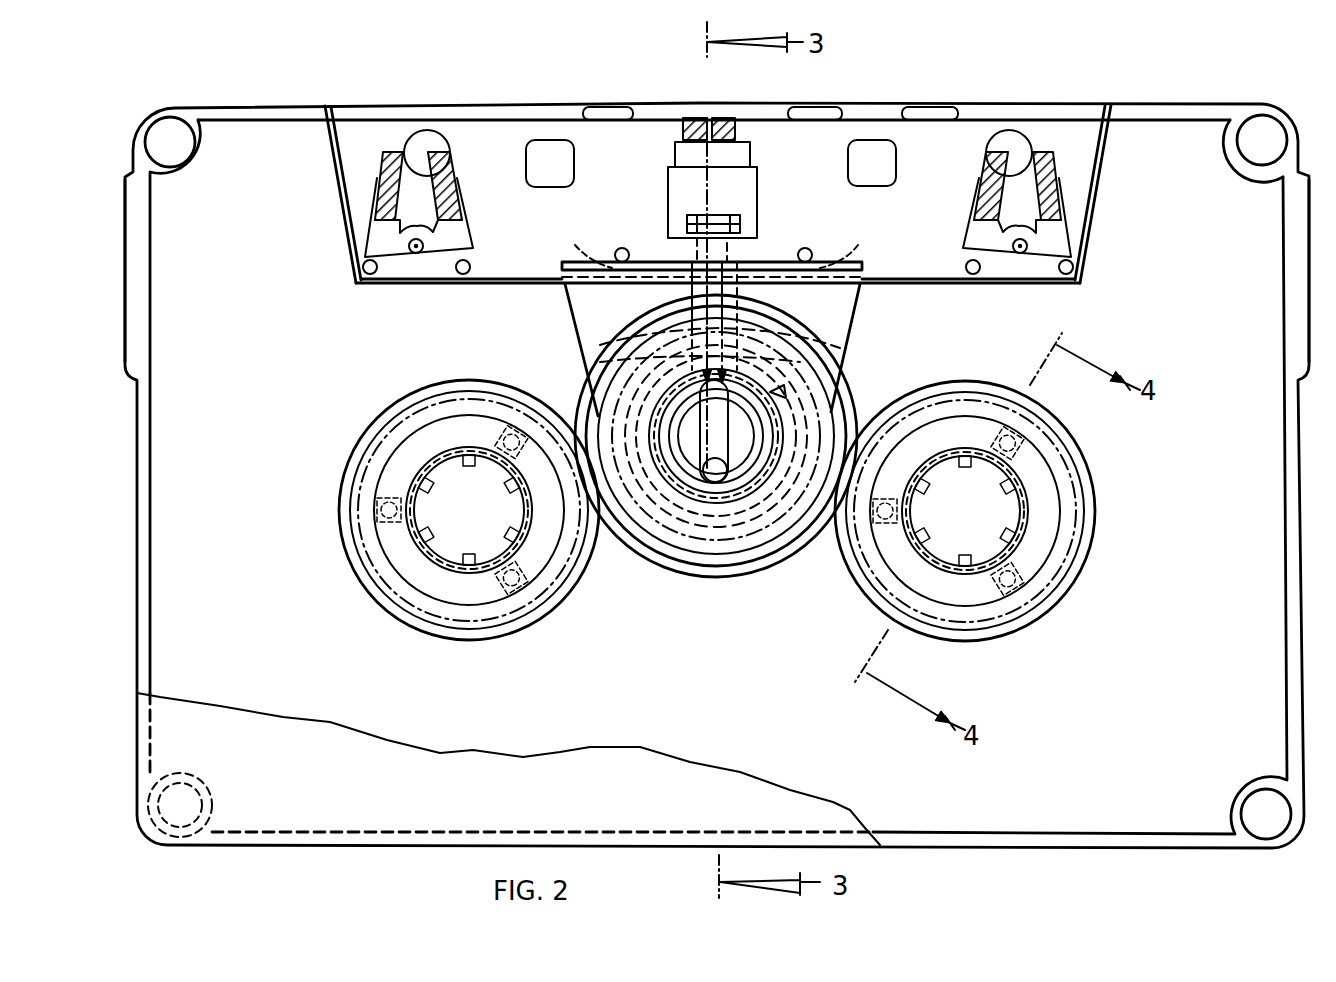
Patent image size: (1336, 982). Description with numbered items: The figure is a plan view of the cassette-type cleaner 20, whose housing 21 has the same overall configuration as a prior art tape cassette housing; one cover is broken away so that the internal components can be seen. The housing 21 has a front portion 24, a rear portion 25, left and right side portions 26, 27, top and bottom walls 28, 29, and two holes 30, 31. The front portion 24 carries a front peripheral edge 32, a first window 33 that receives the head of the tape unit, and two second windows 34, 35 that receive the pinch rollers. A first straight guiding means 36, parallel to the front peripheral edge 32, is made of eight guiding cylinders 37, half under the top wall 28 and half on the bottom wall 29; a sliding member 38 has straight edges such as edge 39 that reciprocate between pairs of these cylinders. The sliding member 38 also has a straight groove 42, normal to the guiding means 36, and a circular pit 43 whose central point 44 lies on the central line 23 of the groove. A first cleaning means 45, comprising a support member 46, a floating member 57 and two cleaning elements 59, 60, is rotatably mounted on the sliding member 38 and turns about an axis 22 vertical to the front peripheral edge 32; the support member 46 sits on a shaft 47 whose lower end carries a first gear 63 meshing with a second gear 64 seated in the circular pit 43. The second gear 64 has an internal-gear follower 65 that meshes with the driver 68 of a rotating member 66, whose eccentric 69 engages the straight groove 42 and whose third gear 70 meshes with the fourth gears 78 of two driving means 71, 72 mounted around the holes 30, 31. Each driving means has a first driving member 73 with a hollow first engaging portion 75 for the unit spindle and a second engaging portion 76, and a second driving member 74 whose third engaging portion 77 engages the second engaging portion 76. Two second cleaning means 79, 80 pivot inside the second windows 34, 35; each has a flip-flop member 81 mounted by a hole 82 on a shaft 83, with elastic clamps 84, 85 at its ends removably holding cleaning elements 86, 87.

The cassette-type cleaner 20 is at (109, 140).
The housing 21 is at (427, 846).
The axis 22 is at (752, 152).
The central line 23 is at (700, 383).
The front portion 24 is at (272, 108).
The rear portion 25 is at (958, 849).
The left side portion 26 is at (133, 456).
The right side portion 27 is at (1305, 552).
The top wall 28 is at (207, 718).
The bottom wall 29 is at (226, 612).
The hole 30 is at (450, 458).
The hole 31 is at (925, 512).
The front peripheral edge 32 is at (498, 102).
The first window 33 is at (768, 112).
The second window 34 is at (365, 110).
The second window 35 is at (992, 114).
The first straight guiding means 36 is at (620, 207).
The guiding cylinders 37 is at (870, 235).
The sliding member 38 is at (565, 295).
The straight edge 39 is at (662, 263).
The straight groove 42 is at (692, 462).
The circular pit 43 is at (868, 355).
The central point 44 is at (735, 472).
The first cleaning means 45 is at (700, 115).
The support member 46 is at (752, 200).
The shaft 47 is at (737, 252).
The floating member 57 is at (673, 152).
The cleaning element 59 is at (690, 117).
The cleaning element 60 is at (723, 117).
The first gear 63 is at (600, 345).
The second gear 64 is at (773, 363).
The follower 65 is at (625, 410).
The rotating member 66 is at (672, 545).
The driver 68 is at (805, 400).
The eccentric 69 is at (725, 482).
The third gear 70 is at (738, 595).
The driving means 71 is at (343, 455).
The driving means 72 is at (1058, 619).
The first driving member 73 is at (405, 585).
The second driving member 74 is at (440, 612).
The first engaging portion 75 is at (437, 532).
The second engaging portion 76 is at (522, 590).
The third engaging portion 77 is at (504, 587).
The fourth gear 78 is at (484, 615).
The second cleaning means 79 is at (362, 224).
The second cleaning means 80 is at (1070, 207).
The flip-flop member 81 is at (460, 240).
The hole 82 is at (410, 255).
The shaft 83 is at (423, 256).
The elastic clamp 84 is at (375, 186).
The elastic clamp 85 is at (458, 187).
The cleaning element 86 is at (383, 155).
The cleaning element 87 is at (435, 133).